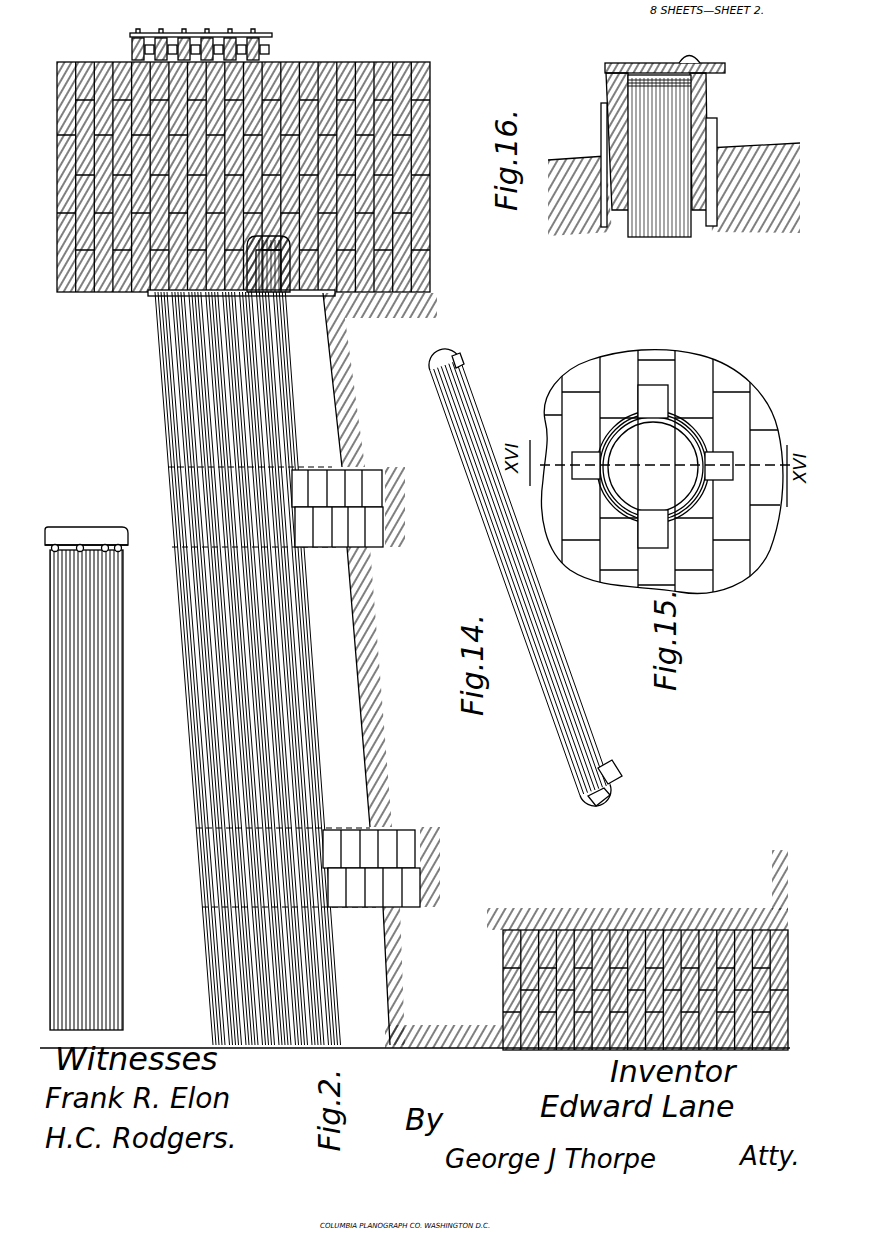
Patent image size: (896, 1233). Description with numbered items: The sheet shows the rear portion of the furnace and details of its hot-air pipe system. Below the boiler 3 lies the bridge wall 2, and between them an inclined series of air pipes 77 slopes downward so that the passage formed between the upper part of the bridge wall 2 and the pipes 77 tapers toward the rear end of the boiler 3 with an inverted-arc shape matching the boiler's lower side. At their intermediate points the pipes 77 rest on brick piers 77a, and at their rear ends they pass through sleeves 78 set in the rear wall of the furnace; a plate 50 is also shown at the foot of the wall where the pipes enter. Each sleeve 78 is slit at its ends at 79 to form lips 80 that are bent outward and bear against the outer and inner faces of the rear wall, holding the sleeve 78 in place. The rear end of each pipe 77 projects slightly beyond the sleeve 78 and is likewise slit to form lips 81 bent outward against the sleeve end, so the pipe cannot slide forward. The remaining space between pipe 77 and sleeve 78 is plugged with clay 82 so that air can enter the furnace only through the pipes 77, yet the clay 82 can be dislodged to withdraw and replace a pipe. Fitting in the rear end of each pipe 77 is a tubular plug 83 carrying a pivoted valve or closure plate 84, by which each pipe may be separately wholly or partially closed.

In FIG. 2, the bridge wall 2 is at (549, 930).
In FIG. 2, the boiler 3 is at (123, 812).
In FIG. 2, the base plate 50 is at (157, 295).
In FIG. 2, the air pipes 77 is at (214, 664).
In FIG. 16, the air pipes 77 is at (683, 205).
In FIG. 15, the air pipes 77 is at (680, 500).
In FIG. 2, the brick piers 77a is at (338, 548).
In FIG. 2, the sleeves 78 is at (274, 296).
In FIG. 16, the sleeves 78 is at (610, 236).
In FIG. 15, the sleeves 78 is at (618, 495).
In FIG. 14, the sleeves 78 is at (500, 566).
In FIG. 14, the slits 79 is at (455, 354).
In FIG. 15, the lips 80 is at (580, 452).
In FIG. 14, the lips 80 is at (614, 770).
In FIG. 15, the lips 81 is at (652, 466).
In FIG. 16, the clay 82 is at (718, 130).
In FIG. 16, the tubular plug 83 is at (690, 224).
In FIG. 2, the valve or closure plate 84 is at (133, 33).
In FIG. 16, the valve or closure plate 84 is at (641, 65).